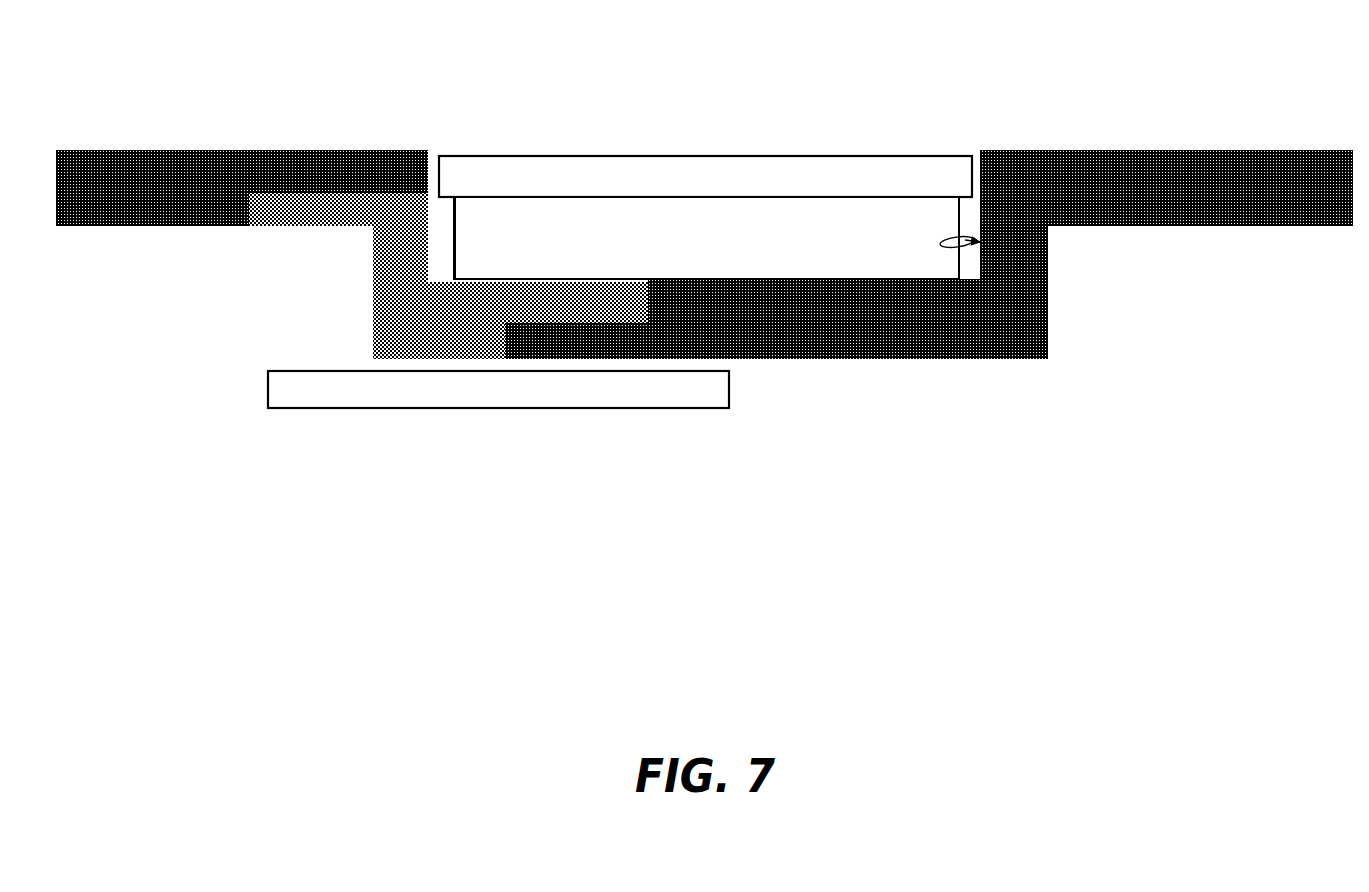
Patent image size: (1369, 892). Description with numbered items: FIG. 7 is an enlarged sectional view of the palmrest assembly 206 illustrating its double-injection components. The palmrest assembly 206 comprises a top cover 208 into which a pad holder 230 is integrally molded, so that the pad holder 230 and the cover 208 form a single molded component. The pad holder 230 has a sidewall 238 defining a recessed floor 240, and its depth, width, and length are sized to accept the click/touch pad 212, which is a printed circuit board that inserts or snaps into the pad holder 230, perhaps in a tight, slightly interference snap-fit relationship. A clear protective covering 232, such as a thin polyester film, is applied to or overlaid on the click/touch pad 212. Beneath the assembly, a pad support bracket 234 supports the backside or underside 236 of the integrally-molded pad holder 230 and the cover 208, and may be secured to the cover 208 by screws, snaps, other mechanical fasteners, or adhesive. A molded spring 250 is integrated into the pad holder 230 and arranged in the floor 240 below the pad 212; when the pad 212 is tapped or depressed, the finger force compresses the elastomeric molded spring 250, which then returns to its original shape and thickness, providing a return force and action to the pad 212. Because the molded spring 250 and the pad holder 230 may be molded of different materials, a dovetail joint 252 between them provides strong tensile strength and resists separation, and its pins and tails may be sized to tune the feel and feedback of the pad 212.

The palmrest assembly 206 is at (1254, 227).
The top cover 208 is at (90, 151).
The click/touch pad 212 is at (488, 215).
The pad holder 230 is at (856, 358).
The clear protective covering 232 is at (937, 156).
The pad support bracket 234 is at (267, 390).
The underside 236 is at (779, 361).
The sidewall 238 is at (962, 250).
The recessed floor 240 is at (971, 283).
The molded spring 250 is at (385, 296).
The dovetail joint 252 is at (354, 292).